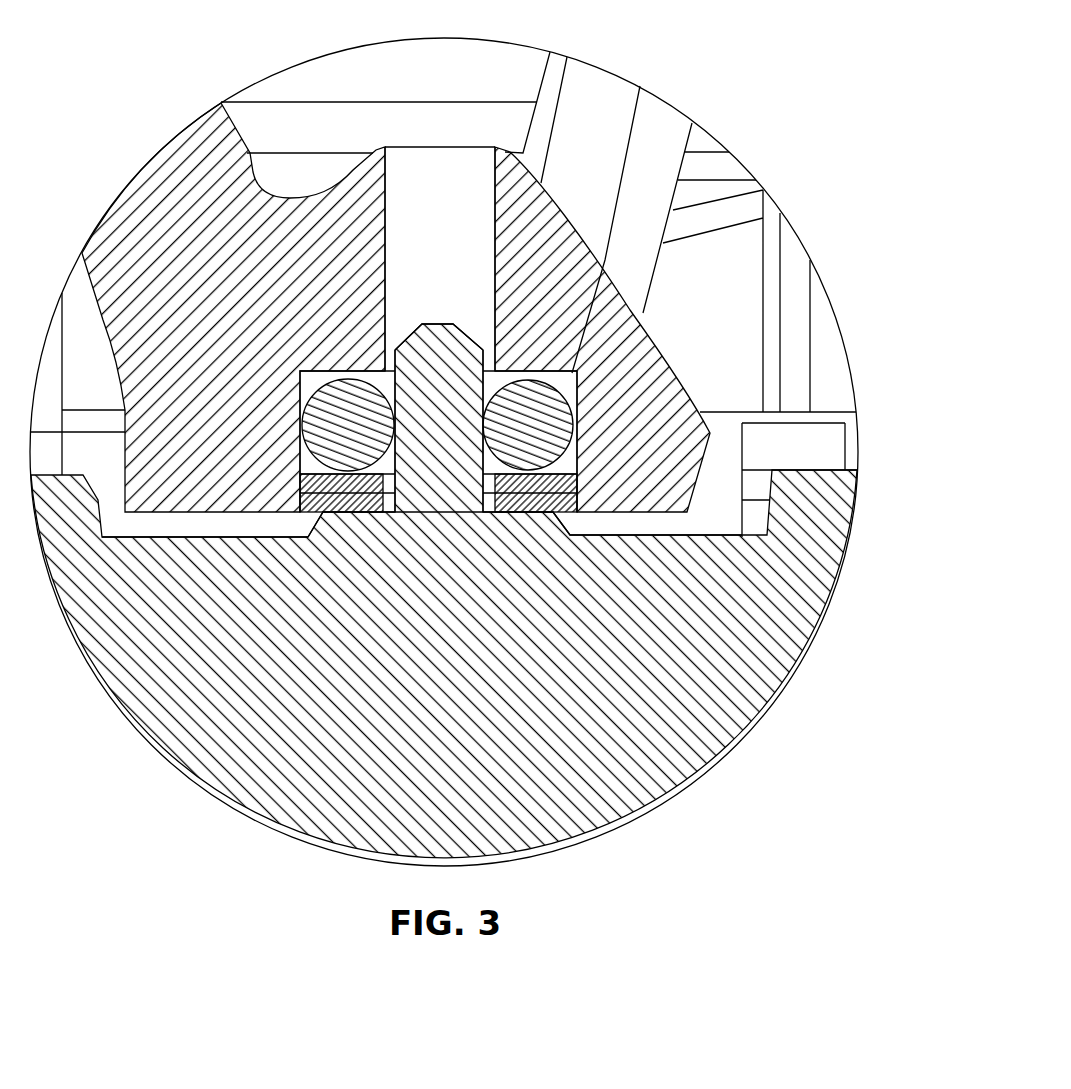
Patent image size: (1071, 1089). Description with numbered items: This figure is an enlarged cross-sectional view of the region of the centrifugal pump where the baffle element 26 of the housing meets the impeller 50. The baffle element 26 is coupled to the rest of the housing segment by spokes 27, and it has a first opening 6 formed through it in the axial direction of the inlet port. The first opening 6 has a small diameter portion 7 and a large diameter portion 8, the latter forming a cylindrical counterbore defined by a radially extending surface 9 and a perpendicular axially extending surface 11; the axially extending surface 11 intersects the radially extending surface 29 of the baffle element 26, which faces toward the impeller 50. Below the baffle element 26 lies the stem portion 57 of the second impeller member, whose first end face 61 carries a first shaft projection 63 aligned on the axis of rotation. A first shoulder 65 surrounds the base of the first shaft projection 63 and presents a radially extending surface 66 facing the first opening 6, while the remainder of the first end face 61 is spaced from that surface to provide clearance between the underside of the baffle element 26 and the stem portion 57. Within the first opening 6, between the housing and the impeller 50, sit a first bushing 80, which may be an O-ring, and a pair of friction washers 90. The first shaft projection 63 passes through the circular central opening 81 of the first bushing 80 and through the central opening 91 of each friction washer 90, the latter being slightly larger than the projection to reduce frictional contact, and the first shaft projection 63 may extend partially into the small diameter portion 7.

The first opening 6 is at (410, 138).
The small diameter portion 7 is at (460, 178).
The large diameter portion 8 is at (541, 365).
The radially extending surface 9 is at (333, 373).
The axially extending surface 11 is at (323, 512).
The baffle element 26 is at (360, 163).
The spokes 27 is at (213, 167).
The radially extending surface 29 is at (237, 512).
The impeller 50 is at (490, 591).
The stem portion 57 is at (793, 520).
The first end face 61 is at (703, 537).
The first shaft projection 63 is at (420, 324).
The first shoulder 65 is at (556, 498).
The radially extending surface 66 is at (532, 512).
The first bushing 80 is at (600, 375).
The central opening 81 is at (483, 472).
The friction washer 90 is at (518, 512).
The central opening 91 is at (475, 512).